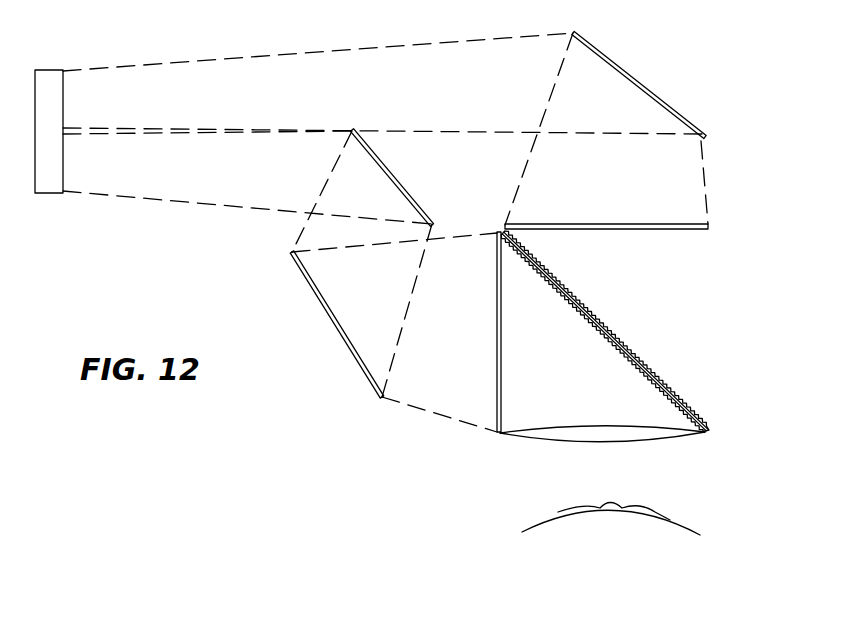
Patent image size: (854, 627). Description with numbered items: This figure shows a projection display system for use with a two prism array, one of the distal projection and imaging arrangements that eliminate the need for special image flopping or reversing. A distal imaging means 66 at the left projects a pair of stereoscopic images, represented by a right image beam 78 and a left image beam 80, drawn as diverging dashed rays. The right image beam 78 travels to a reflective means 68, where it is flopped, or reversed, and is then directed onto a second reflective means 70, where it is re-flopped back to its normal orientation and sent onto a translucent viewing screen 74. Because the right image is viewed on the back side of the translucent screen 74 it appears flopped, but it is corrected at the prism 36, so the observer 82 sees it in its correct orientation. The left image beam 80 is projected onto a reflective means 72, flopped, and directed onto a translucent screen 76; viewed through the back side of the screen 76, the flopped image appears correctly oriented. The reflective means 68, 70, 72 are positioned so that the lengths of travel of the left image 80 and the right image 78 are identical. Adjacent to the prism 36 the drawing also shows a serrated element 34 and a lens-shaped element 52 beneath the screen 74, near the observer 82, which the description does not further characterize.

The distal imaging means 66 is at (55, 184).
The left image beam 80 is at (140, 92).
The right image beam 78 is at (148, 182).
The reflective means 68 is at (400, 187).
The reflective means 70 is at (322, 318).
The reflective means 72 is at (637, 83).
The translucent screen 76 is at (673, 230).
The translucent viewing screen 74 is at (498, 342).
The diffraction grating 34 is at (638, 360).
The prism 36 is at (617, 352).
The cylindrical lens 52 is at (663, 433).
The observer 82 is at (557, 530).